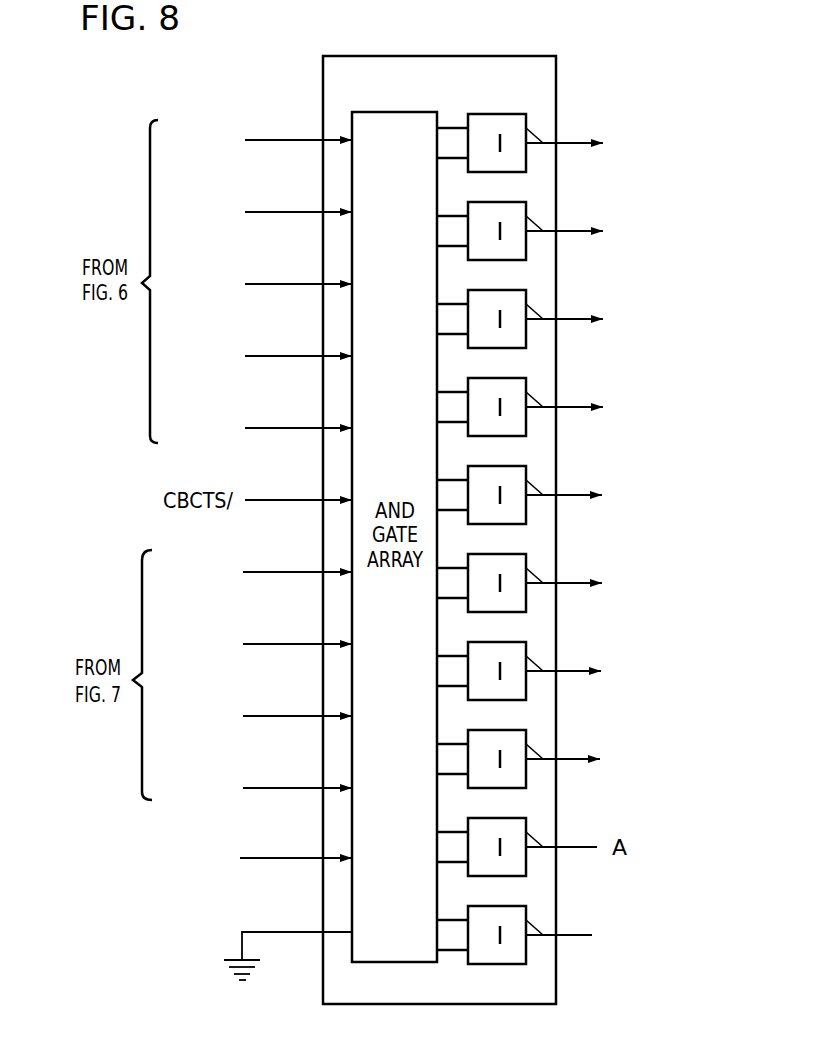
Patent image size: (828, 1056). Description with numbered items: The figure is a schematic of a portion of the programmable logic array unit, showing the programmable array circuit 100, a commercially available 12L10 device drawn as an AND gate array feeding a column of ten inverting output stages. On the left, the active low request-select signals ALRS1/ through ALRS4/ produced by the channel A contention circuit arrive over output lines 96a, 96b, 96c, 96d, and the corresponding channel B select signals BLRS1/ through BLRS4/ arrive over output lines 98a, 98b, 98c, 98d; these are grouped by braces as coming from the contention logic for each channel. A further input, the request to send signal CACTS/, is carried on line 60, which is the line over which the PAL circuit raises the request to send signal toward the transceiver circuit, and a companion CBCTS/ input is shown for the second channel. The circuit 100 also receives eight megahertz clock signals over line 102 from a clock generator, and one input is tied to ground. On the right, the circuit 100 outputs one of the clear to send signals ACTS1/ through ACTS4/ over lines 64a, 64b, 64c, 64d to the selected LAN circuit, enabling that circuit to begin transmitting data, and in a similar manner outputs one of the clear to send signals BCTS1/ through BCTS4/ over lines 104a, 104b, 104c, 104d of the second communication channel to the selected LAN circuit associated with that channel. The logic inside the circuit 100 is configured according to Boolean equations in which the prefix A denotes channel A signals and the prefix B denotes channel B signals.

The programmable array circuit 100 is at (465, 56).
The output line 96a is at (300, 140).
The output line 96b is at (300, 212).
The output line 96c is at (298, 284).
The output line 96d is at (301, 356).
The line 60 is at (288, 428).
The output line 98a is at (267, 572).
The output line 98b is at (268, 644).
The output line 98c is at (270, 716).
The output line 98d is at (270, 788).
The line 102 is at (258, 858).
The line 64a is at (584, 141).
The line 64b is at (575, 229).
The line 64c is at (574, 317).
The line 64d is at (573, 406).
The line 104a is at (582, 494).
The line 104b is at (575, 582).
The line 104c is at (573, 669).
The line 104d is at (570, 757).